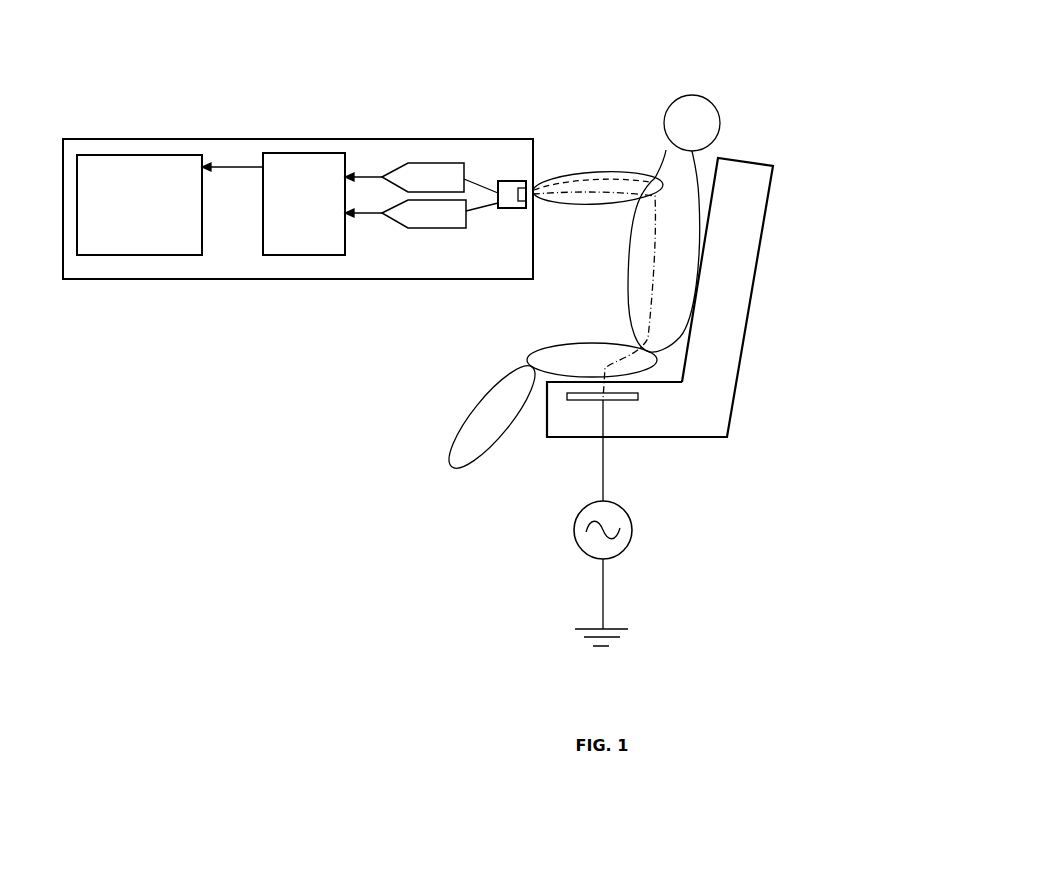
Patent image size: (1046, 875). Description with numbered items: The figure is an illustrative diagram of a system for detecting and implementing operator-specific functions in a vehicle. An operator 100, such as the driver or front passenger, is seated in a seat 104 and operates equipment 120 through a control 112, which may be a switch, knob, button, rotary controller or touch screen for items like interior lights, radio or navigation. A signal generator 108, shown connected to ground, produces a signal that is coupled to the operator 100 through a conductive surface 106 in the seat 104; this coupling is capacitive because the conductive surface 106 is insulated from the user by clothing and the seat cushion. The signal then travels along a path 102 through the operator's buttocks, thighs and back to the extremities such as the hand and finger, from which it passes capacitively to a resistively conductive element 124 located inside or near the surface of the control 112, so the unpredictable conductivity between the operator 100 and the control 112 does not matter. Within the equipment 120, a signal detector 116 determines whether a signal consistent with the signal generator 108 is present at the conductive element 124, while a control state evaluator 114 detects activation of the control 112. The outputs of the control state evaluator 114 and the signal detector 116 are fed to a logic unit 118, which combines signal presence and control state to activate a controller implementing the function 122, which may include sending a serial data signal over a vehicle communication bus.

The operator 100 is at (685, 197).
The path 102 is at (663, 231).
The seat 104 is at (727, 293).
The conductive surface 106 is at (638, 396).
The signal generator 108 is at (632, 531).
The control 112 is at (512, 181).
The control state evaluator 114 is at (425, 163).
The signal detector 116 is at (422, 229).
The logic unit 118 is at (302, 256).
The equipment 120 is at (257, 138).
The function 122 is at (133, 156).
The conductive element 124 is at (532, 197).